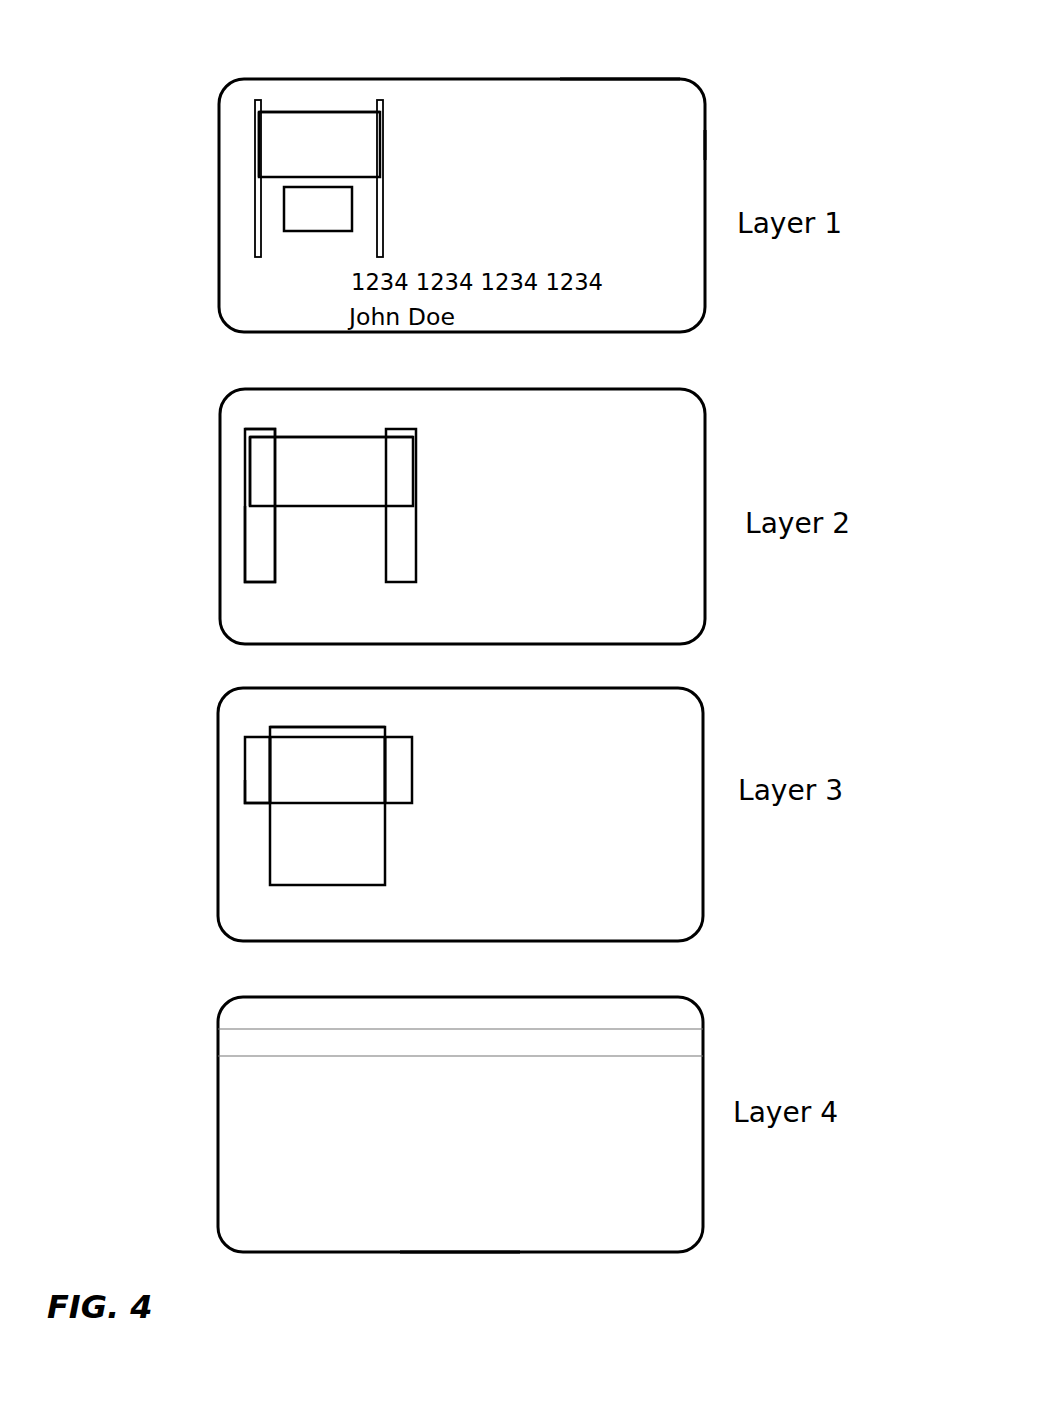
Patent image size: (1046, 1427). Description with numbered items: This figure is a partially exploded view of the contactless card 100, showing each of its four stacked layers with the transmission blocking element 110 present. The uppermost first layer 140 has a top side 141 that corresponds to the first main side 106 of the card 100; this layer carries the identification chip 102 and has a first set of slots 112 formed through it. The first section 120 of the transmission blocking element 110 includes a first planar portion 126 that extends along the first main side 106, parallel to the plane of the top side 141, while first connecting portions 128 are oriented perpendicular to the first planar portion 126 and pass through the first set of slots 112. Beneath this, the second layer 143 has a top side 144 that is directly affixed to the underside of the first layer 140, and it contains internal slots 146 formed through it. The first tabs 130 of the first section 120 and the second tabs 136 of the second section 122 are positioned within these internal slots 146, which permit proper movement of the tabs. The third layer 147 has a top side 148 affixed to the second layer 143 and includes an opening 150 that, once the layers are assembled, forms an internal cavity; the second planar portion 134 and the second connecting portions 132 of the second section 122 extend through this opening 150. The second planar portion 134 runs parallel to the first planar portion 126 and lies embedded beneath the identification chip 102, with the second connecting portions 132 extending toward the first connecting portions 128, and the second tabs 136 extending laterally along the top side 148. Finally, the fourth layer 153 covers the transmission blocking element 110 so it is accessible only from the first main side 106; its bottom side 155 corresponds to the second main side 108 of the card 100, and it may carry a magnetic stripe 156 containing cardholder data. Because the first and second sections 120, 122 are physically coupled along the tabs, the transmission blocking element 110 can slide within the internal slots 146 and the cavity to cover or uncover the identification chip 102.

The card 100 is at (96, 84).
The identification chip 102 is at (313, 222).
The first main side 106 is at (598, 87).
The second main side 108 is at (457, 1216).
The transmission blocking element 110 is at (299, 106).
The first set of slots 112 is at (380, 107).
The first section 120 is at (348, 124).
The second section 122 is at (361, 751).
The first planar portion 126 is at (272, 118).
The first connecting portions 128 is at (260, 155).
The first tabs 130 is at (257, 495).
The second connecting portions 132 is at (272, 772).
The second planar portion 134 is at (297, 753).
The second tabs 136 is at (250, 798).
The first layer 140 is at (685, 130).
The top side of the first layer 141 is at (549, 178).
The second layer 143 is at (687, 473).
The top side of the second layer 144 is at (575, 550).
The internal slots 146 is at (398, 533).
The third layer 147 is at (688, 765).
The top side of the third layer 148 is at (560, 792).
The opening 150 is at (293, 828).
The fourth layer 153 is at (683, 1097).
The bottom side of the fourth layer 155 is at (511, 1155).
The magnetic stripe 156 is at (683, 1043).